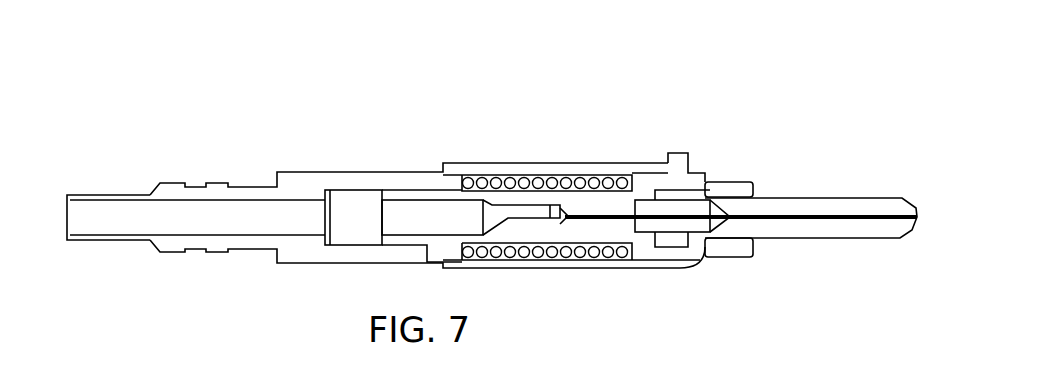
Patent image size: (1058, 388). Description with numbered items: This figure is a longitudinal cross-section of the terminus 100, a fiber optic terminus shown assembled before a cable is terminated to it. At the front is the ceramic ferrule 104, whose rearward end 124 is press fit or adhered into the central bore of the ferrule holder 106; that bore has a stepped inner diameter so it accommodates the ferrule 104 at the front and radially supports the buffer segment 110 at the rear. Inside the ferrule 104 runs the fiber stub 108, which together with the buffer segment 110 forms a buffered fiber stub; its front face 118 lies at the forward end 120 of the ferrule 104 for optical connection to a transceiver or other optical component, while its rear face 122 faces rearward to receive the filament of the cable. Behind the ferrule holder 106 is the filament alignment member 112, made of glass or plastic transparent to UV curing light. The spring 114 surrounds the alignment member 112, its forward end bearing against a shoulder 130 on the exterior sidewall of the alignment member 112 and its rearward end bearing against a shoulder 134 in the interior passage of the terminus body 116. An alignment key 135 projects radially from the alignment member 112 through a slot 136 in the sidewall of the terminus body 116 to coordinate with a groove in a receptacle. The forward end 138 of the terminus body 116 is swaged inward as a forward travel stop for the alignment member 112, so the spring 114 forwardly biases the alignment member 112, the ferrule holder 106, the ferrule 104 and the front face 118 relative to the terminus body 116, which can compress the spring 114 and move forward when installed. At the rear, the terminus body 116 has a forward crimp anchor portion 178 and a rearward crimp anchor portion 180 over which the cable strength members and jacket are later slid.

The terminus 100 is at (386, 115).
The ferrule 104 is at (813, 203).
The ferrule holder 106 is at (733, 185).
The fiber stub 108 is at (762, 238).
The buffer segment 110 is at (657, 224).
The filament alignment member 112 is at (565, 230).
The spring 114 is at (515, 252).
The terminus body 116 is at (333, 185).
The front face 118 is at (916, 212).
The forward end 120 is at (897, 232).
The rear face 122 is at (565, 216).
The rearward end 124 is at (723, 226).
The shoulder 130 is at (633, 173).
The shoulder 134 is at (463, 175).
The alignment key 135 is at (674, 153).
The slot 136 is at (636, 163).
The forward end 138 is at (698, 170).
The forward crimp anchor portion 178 is at (218, 193).
The rearward crimp anchor portion 180 is at (118, 197).